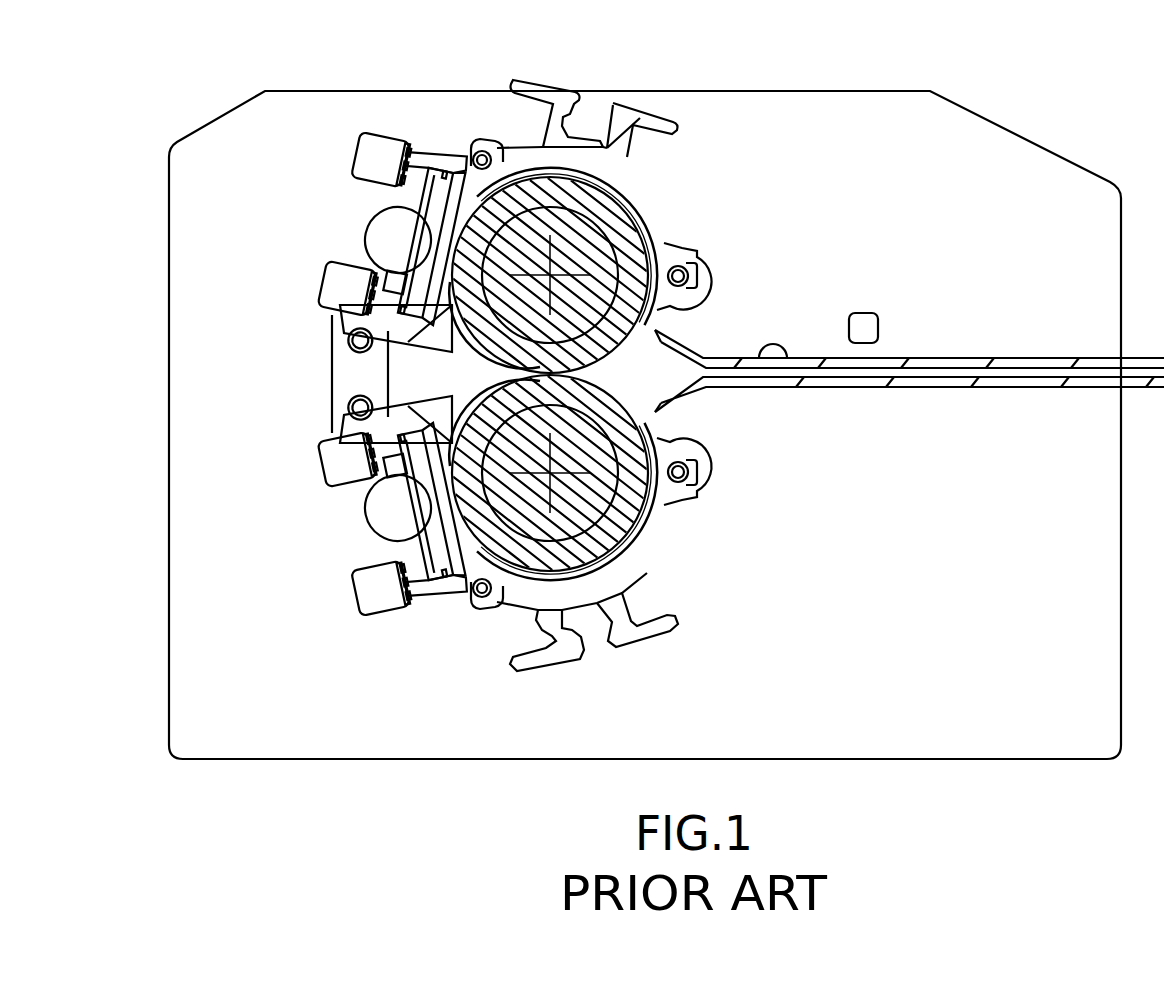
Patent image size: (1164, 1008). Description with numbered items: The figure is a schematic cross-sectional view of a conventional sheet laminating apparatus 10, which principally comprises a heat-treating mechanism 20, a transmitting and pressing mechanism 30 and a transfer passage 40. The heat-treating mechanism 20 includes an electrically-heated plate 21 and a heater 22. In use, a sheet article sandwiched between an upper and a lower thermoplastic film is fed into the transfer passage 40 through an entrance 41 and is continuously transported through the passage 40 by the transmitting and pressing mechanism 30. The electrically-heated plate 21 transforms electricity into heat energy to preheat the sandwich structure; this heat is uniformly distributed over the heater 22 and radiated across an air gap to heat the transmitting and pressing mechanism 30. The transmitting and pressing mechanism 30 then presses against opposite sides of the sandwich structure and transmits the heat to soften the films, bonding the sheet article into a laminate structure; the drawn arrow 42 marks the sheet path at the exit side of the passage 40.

The sheet laminating apparatus 10 is at (1046, 78).
The heat-treating mechanism 20 is at (535, 145).
The electrically-heated plate 21 is at (427, 158).
The heater 22 is at (630, 185).
The transmitting and pressing mechanism 30 is at (600, 282).
The transfer passage 40 is at (601, 373).
The entrance 41 is at (487, 375).
The sheet conveyance direction 42 is at (637, 364).